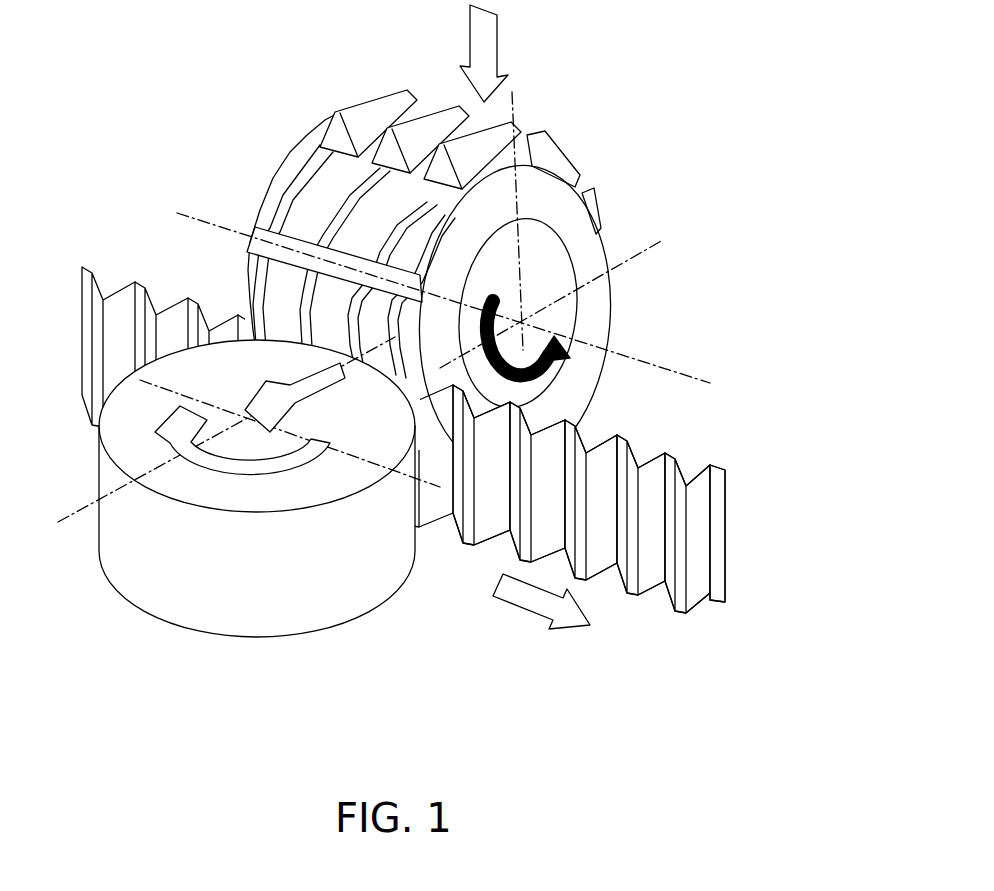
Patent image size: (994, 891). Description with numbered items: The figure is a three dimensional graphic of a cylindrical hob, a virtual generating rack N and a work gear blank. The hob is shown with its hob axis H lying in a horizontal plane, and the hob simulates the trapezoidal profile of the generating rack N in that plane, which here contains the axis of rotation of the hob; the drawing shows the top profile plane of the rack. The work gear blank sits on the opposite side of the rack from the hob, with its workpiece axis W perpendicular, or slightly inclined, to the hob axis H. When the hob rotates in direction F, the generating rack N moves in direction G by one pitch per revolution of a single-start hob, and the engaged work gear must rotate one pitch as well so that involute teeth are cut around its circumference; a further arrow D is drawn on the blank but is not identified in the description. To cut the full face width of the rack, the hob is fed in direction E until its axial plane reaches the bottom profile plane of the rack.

The workpiece axis W is at (235, 275).
The hob axis H is at (687, 367).
The virtual generating rack N is at (705, 534).
The hob feed direction E is at (484, 53).
The hob rotation direction F is at (528, 338).
The workpiece rotation direction D is at (295, 397).
The rack shift direction G is at (541, 601).